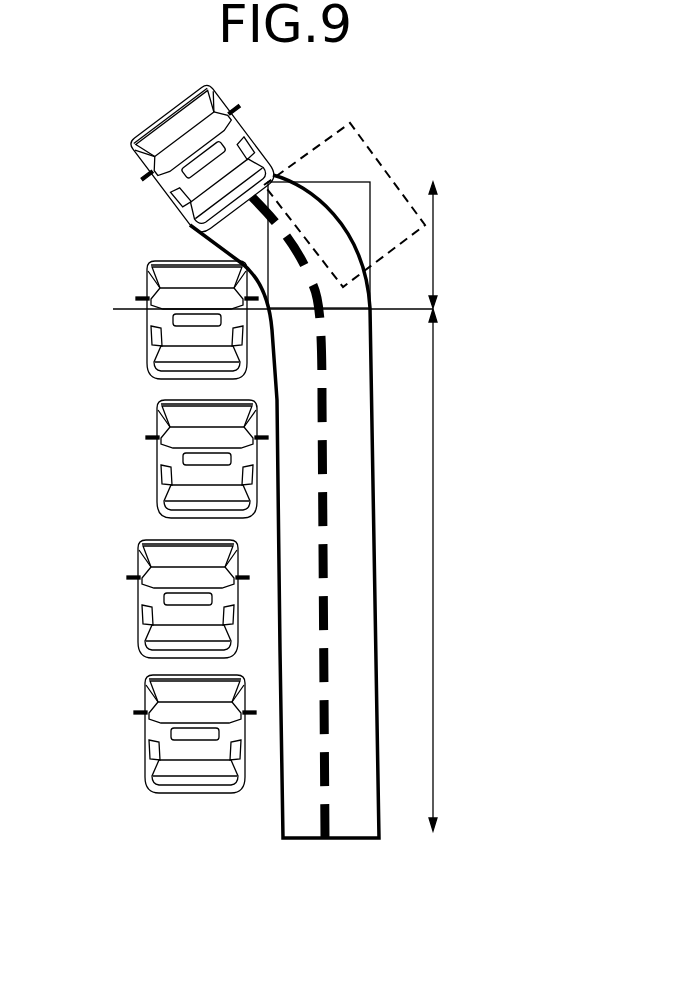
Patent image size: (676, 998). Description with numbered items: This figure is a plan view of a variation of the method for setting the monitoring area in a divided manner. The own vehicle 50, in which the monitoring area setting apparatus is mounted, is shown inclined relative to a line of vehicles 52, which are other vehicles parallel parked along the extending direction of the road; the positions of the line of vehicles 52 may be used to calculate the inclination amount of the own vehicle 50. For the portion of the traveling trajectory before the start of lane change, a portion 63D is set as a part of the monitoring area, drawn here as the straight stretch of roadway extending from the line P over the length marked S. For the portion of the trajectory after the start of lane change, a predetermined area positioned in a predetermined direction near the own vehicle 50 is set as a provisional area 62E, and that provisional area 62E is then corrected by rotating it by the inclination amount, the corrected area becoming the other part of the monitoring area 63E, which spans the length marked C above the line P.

The own vehicle 50 is at (168, 110).
The line of vehicles 52 is at (139, 615).
The provisional area 62E is at (373, 153).
The monitoring area 63E is at (328, 181).
The portion before start of lane change 63D is at (373, 506).
The entry section length C is at (433, 249).
The reference position line P is at (437, 307).
The straight section length S is at (433, 652).